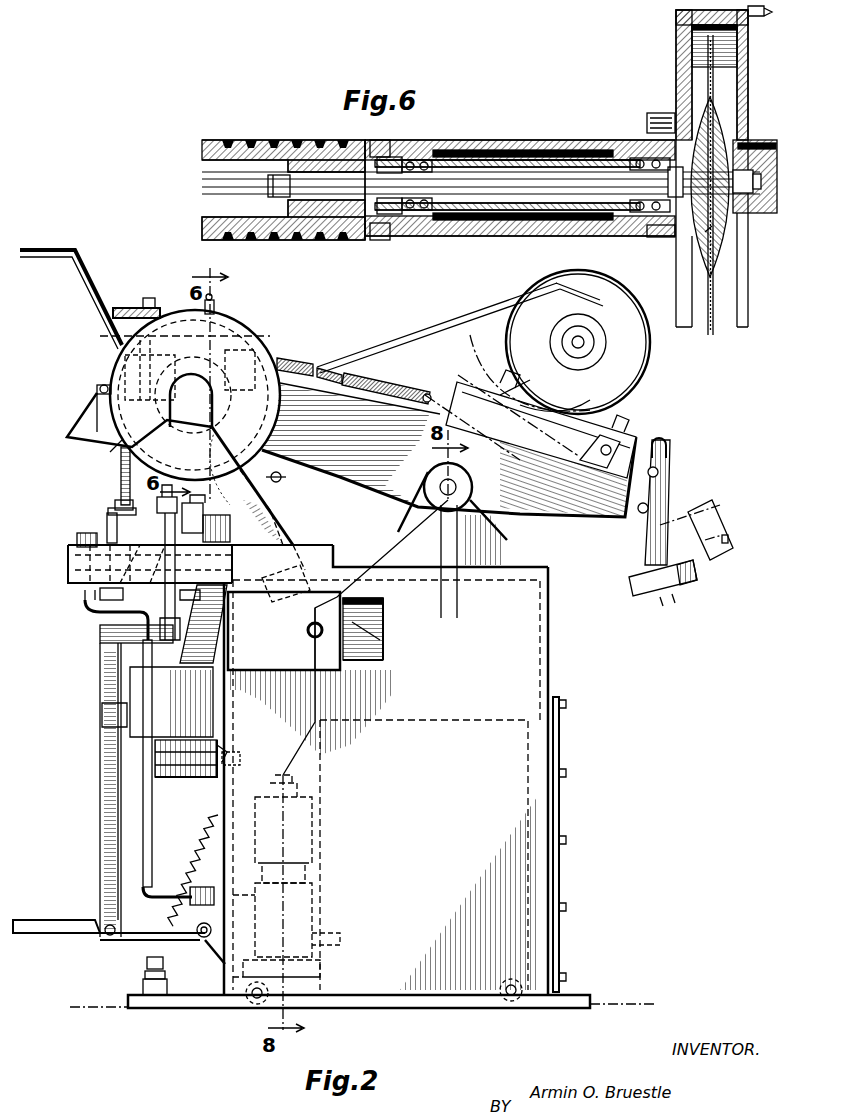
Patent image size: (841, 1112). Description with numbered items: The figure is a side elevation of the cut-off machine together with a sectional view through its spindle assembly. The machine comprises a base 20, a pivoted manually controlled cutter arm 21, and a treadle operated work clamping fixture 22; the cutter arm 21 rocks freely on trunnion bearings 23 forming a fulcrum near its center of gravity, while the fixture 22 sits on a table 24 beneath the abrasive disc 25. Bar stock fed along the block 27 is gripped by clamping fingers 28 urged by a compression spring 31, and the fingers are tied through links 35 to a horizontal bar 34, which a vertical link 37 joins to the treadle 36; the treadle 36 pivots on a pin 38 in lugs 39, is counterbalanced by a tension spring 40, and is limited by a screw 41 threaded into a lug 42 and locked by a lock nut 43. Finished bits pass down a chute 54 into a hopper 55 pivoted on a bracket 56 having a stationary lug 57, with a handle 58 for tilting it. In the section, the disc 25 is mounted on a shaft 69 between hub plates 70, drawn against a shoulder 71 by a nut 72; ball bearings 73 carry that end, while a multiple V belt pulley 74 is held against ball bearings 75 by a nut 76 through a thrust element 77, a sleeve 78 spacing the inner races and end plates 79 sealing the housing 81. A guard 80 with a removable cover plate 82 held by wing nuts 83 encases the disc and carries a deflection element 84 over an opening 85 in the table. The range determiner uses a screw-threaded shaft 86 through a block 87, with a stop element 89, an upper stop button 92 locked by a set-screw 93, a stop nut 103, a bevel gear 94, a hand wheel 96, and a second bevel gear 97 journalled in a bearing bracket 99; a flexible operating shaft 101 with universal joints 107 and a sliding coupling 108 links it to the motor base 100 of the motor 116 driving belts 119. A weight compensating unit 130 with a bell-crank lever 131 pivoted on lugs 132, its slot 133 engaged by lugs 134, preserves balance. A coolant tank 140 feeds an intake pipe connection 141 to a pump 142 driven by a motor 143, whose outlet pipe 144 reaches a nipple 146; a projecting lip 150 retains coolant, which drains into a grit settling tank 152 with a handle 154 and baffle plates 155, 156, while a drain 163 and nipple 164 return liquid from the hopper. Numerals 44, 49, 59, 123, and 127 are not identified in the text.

In FIG. 2, the base 20 is at (430, 997).
In FIG. 6, the cutter arm 21 is at (502, 140).
In FIG. 2, the cutter arm 21 is at (365, 470).
In FIG. 2, the work clamping fixture 22 is at (200, 505).
In FIG. 2, the trunnion bearings 23 is at (458, 485).
In FIG. 2, the table 24 is at (68, 568).
In FIG. 6, the abrasive disc 25 is at (716, 325).
In FIG. 2, the block 27 is at (230, 527).
In FIG. 2, the clamping fingers 28 is at (157, 503).
In FIG. 2, the compression spring 31 is at (160, 540).
In FIG. 2, the horizontal bar 34 is at (100, 634).
In FIG. 2, the links 35 is at (175, 600).
In FIG. 2, the treadle 36 is at (50, 920).
In FIG. 2, the vertical link 37 is at (100, 752).
In FIG. 2, the pin 38 is at (200, 937).
In FIG. 2, the lugs 39 is at (215, 950).
In FIG. 2, the tension spring 40 is at (195, 865).
In FIG. 2, the screw 41 is at (147, 962).
In FIG. 2, the lug 42 is at (143, 988).
In FIG. 2, the lock nut 43 is at (145, 975).
In FIG. 2, the handle 44 is at (60, 250).
In FIG. 2, the fitting 49 is at (196, 594).
In FIG. 2, the chute 54 is at (222, 625).
In FIG. 2, the hopper 55 is at (171, 702).
In FIG. 2, the bracket 56 is at (214, 777).
In FIG. 2, the stationary lug 57 is at (178, 777).
In FIG. 2, the handle 58 is at (102, 712).
In FIG. 2, the bracket 59 is at (198, 497).
In FIG. 6, the shaft 69 is at (746, 143).
In FIG. 6, the hub plates 70 is at (722, 125).
In FIG. 6, the shoulder 71 is at (720, 225).
In FIG. 6, the nut 72 is at (770, 143).
In FIG. 6, the ball bearings 73 is at (645, 158).
In FIG. 6, the multiple V belt pulley 74 is at (210, 146).
In FIG. 6, the ball bearings 75 is at (420, 160).
In FIG. 6, the nut 76 is at (268, 186).
In FIG. 6, the thrust element 77 is at (393, 157).
In FIG. 6, the sleeve 78 is at (558, 142).
In FIG. 6, the end plates 79 is at (380, 140).
In FIG. 6, the guard 80 is at (680, 30).
In FIG. 6, the housing 81 is at (584, 140).
In FIG. 6, the cover plate 82 is at (749, 50).
In FIG. 2, the cover plate 82 is at (255, 338).
In FIG. 6, the wing nuts 83 is at (766, 10).
In FIG. 2, the wing nuts 83 is at (214, 304).
In FIG. 2, the deflection element 84 is at (283, 505).
In FIG. 2, the opening 85 is at (305, 565).
In FIG. 2, the screw-threaded shaft 86 is at (121, 470).
In FIG. 2, the block 87 is at (125, 368).
In FIG. 2, the stop element 89 is at (85, 602).
In FIG. 2, the upper stop button 92 is at (108, 511).
In FIG. 2, the set-screw 93 is at (115, 502).
In FIG. 2, the bevel gear 94 is at (108, 337).
In FIG. 2, the hand wheel 96 is at (130, 308).
In FIG. 2, the second bevel gear 97 is at (166, 305).
In FIG. 2, the bearing bracket 99 is at (236, 338).
In FIG. 2, the motor base 100 is at (504, 428).
In FIG. 2, the flexible operating shaft 101 is at (297, 358).
In FIG. 2, the stop nut 103 is at (118, 449).
In FIG. 2, the universal joints 107 is at (428, 392).
In FIG. 2, the sliding coupling 108 is at (332, 368).
In FIG. 2, the motor 116 is at (632, 360).
In FIG. 6, the belts 119 is at (328, 138).
In FIG. 2, the belts 119 is at (400, 345).
In FIG. 2, the block 123 is at (77, 541).
In FIG. 2, the pipe 127 is at (100, 541).
In FIG. 2, the weight compensating unit 130 is at (666, 490).
In FIG. 2, the bell-crank lever 131 is at (650, 553).
In FIG. 2, the lugs 132 is at (638, 513).
In FIG. 2, the slot 133 is at (668, 445).
In FIG. 2, the lugs 134 is at (658, 470).
In FIG. 2, the coolant tank 140 is at (440, 720).
In FIG. 2, the intake pipe connection 141 is at (340, 936).
In FIG. 2, the pump 142 is at (312, 905).
In FIG. 2, the motor 143 is at (312, 838).
In FIG. 2, the outlet pipe 144 is at (195, 887).
In FIG. 2, the nipple 146 is at (100, 590).
In FIG. 2, the projecting lip 150 is at (340, 548).
In FIG. 2, the grit settling tank 152 is at (311, 673).
In FIG. 2, the handle 154 is at (309, 626).
In FIG. 2, the baffle plate 155 is at (383, 657).
In FIG. 2, the baffle plate 156 is at (383, 628).
In FIG. 2, the drain 163 is at (232, 753).
In FIG. 2, the nipple 164 is at (222, 745).